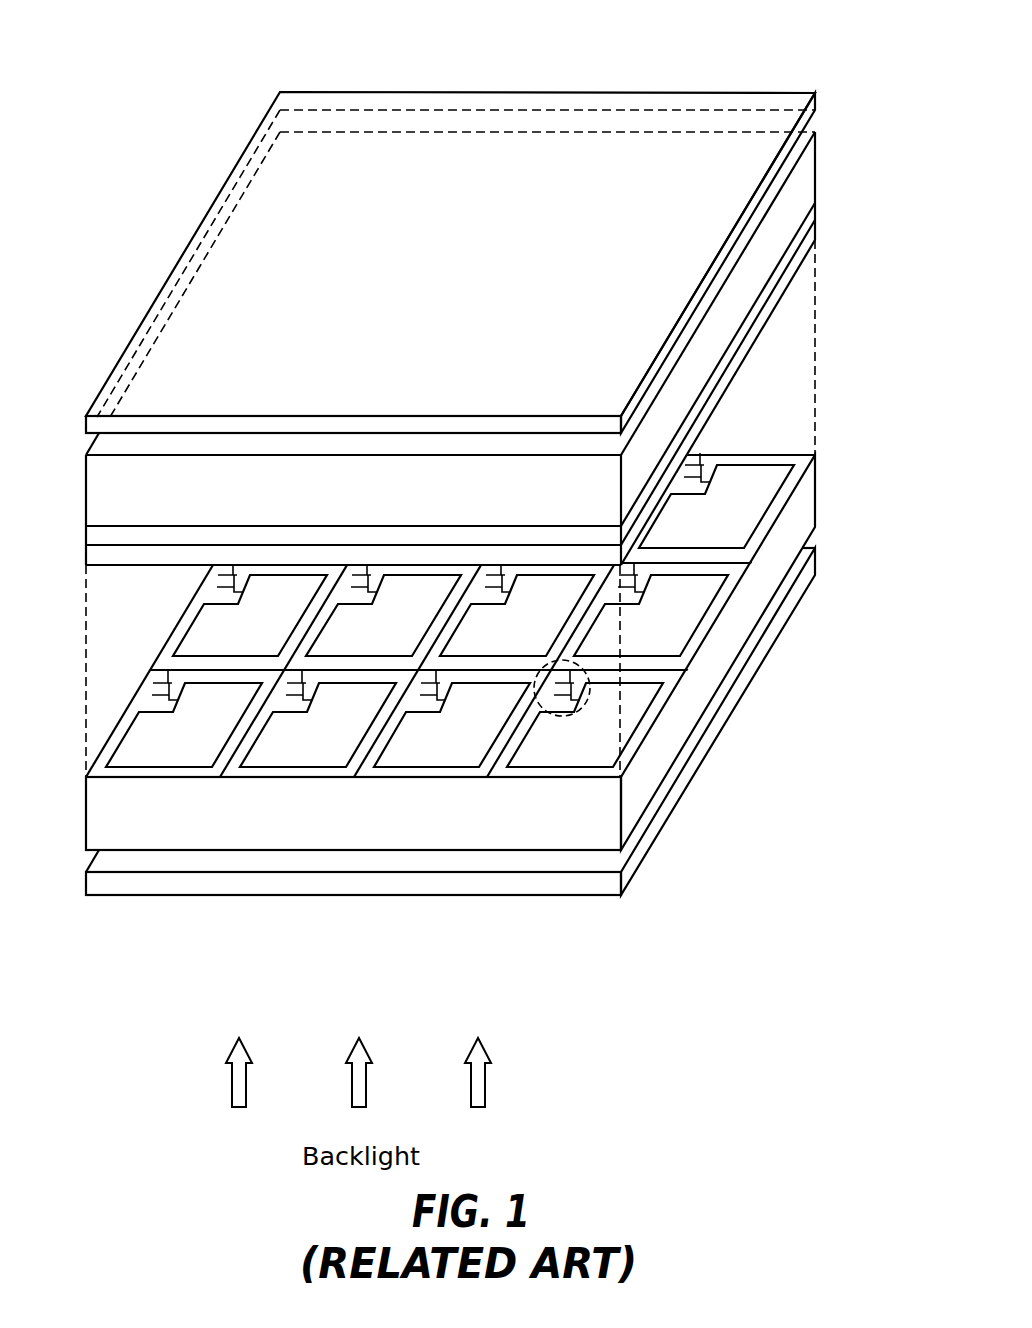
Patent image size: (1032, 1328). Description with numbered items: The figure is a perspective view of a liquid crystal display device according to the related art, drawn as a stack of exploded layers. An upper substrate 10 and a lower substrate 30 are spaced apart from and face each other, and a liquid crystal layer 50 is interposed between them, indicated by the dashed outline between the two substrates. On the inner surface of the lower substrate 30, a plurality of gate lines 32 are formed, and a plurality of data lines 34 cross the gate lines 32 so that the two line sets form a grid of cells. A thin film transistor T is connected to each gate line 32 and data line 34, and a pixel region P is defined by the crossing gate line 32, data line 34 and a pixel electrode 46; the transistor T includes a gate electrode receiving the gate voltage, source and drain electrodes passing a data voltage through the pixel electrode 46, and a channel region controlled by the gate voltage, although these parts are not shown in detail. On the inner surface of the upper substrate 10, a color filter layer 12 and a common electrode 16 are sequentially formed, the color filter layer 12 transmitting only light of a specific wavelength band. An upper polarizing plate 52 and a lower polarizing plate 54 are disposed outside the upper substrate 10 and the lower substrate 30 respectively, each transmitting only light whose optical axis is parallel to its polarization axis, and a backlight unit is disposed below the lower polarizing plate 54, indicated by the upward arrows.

The upper polarizing plate 52 is at (722, 100).
The color filter layer 12 is at (815, 215).
The common electrode 16 is at (815, 238).
The upper substrate 10 is at (86, 455).
The liquid crystal layer 50 is at (86, 565).
The lower substrate 30 is at (86, 777).
The gate line 32 is at (470, 672).
The data line 34 is at (496, 762).
The pixel region P is at (293, 775).
The pixel electrode 46 is at (640, 722).
The thin film transistor T is at (562, 717).
The lower polarizing plate 54 is at (765, 639).